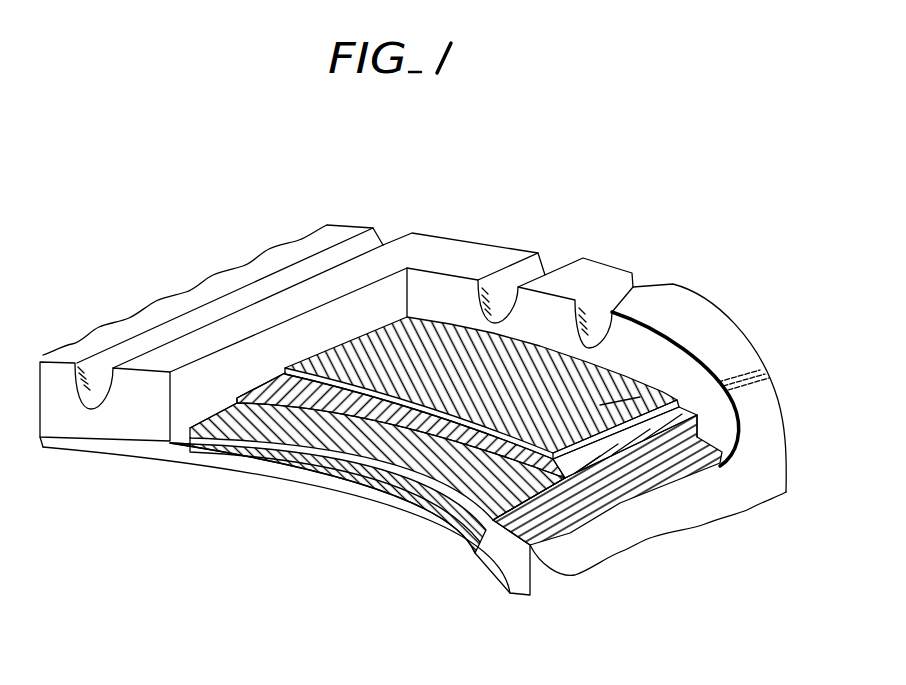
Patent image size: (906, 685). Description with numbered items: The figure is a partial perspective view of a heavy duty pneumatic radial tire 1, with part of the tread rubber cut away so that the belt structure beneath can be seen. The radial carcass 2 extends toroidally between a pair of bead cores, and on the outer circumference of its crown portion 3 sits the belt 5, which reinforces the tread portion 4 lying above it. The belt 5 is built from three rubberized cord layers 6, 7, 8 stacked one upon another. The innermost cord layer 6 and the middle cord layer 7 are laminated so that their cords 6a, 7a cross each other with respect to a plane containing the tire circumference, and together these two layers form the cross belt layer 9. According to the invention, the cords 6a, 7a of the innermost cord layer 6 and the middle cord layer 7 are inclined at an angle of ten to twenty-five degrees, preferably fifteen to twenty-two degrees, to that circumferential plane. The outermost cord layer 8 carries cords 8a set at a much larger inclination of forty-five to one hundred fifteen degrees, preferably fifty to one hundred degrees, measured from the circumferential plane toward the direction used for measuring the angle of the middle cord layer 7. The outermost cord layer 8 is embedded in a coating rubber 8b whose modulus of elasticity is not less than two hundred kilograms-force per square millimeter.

The heavy duty pneumatic radial tire 1 is at (533, 208).
The radial carcass 2 is at (495, 505).
The crown portion 3 is at (215, 463).
The tread portion 4 is at (433, 245).
The belt 5 is at (343, 573).
The innermost cord layer 6 is at (303, 433).
The middle cord layer 7 is at (347, 443).
The outermost cord layer 8 is at (370, 450).
The cross belt layer 9 is at (314, 541).
The cords of innermost cord layer 6a is at (437, 467).
The cords of middle cord layer 7a is at (472, 490).
The cords of outermost cord layer 8a is at (600, 405).
The coating rubber 8b is at (590, 423).